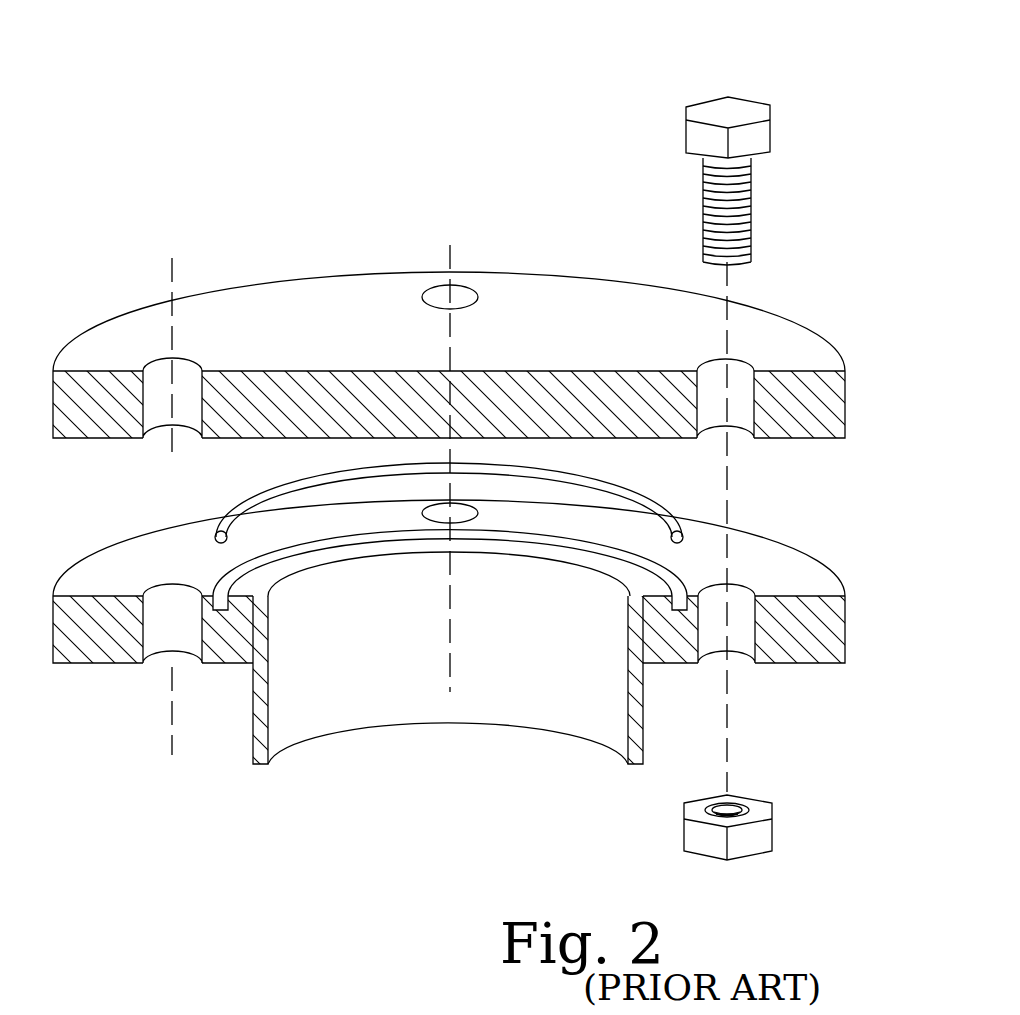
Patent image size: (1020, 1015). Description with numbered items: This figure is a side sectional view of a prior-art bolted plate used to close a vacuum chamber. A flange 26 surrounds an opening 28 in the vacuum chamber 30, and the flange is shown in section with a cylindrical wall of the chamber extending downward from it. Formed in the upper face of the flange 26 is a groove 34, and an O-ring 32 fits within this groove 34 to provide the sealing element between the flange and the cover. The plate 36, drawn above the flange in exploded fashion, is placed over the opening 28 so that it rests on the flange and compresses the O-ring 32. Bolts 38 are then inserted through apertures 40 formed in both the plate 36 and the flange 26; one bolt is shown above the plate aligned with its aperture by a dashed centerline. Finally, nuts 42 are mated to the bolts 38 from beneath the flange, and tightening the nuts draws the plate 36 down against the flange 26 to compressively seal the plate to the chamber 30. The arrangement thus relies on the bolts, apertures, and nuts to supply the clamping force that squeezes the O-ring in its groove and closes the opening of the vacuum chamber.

The flange 26 is at (813, 583).
The opening 28 is at (317, 595).
The vacuum chamber 30 is at (254, 722).
The O-ring 32 is at (640, 478).
The groove 34 is at (674, 601).
The plate 36 is at (813, 355).
The bolt 38 is at (740, 108).
The aperture 40 is at (740, 371).
The nut 42 is at (747, 842).